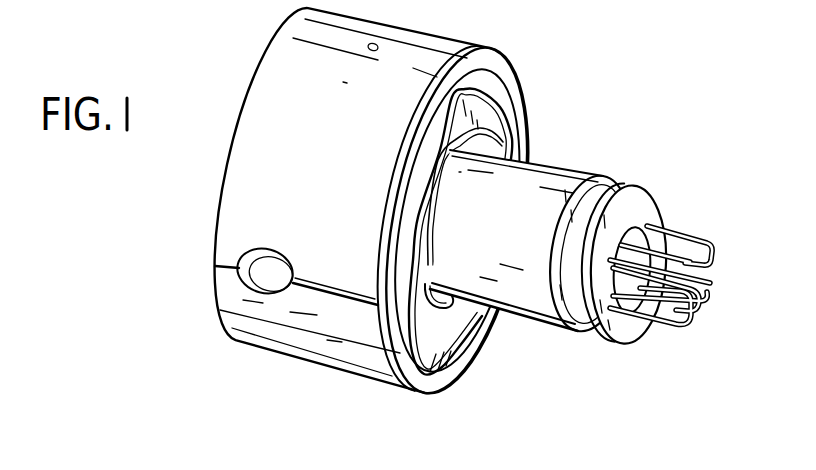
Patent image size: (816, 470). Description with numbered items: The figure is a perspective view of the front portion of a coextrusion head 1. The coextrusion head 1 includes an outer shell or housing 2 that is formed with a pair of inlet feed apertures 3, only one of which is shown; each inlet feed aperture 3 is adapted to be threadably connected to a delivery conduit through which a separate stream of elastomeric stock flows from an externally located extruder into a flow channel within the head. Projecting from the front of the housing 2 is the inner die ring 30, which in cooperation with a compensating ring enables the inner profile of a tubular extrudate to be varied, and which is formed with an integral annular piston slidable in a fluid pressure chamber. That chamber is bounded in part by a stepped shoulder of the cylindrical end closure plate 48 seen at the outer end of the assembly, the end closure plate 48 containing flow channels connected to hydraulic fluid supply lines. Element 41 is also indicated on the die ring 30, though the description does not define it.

The coextrusion head 1 is at (430, 206).
The outer shell or housing 2 is at (253, 158).
The inlet feed aperture 3 is at (253, 291).
The inner die ring 30 is at (533, 197).
The lip 41 is at (522, 287).
The cylindrical end closure plate 48 is at (652, 190).